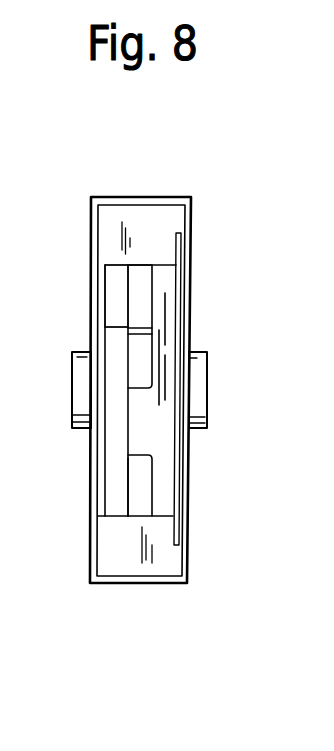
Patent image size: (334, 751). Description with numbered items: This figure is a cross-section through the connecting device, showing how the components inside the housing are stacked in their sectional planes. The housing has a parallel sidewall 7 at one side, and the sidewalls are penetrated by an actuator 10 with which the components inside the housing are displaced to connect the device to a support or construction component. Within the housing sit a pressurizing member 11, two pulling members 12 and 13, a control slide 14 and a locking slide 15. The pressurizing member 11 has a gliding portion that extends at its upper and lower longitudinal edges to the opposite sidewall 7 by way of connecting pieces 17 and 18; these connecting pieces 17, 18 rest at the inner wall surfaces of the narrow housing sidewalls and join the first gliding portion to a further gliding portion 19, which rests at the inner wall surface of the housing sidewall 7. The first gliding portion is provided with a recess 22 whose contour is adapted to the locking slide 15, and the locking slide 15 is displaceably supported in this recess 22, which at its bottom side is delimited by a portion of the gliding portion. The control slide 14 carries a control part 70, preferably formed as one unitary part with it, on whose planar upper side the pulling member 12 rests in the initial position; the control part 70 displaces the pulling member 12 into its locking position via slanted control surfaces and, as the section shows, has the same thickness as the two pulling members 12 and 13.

The sidewall 7 is at (183, 553).
The actuator 10 is at (190, 380).
The pressurizing member 11 is at (104, 562).
The pulling member 12 is at (152, 287).
The pulling member 13 is at (146, 497).
The control slide 14 is at (165, 460).
The locking slide 15 is at (112, 418).
The connecting piece 17 is at (133, 568).
The connecting piece 18 is at (142, 220).
The gliding portion 19 is at (177, 308).
The recess 22 is at (117, 290).
The control part 70 is at (142, 438).